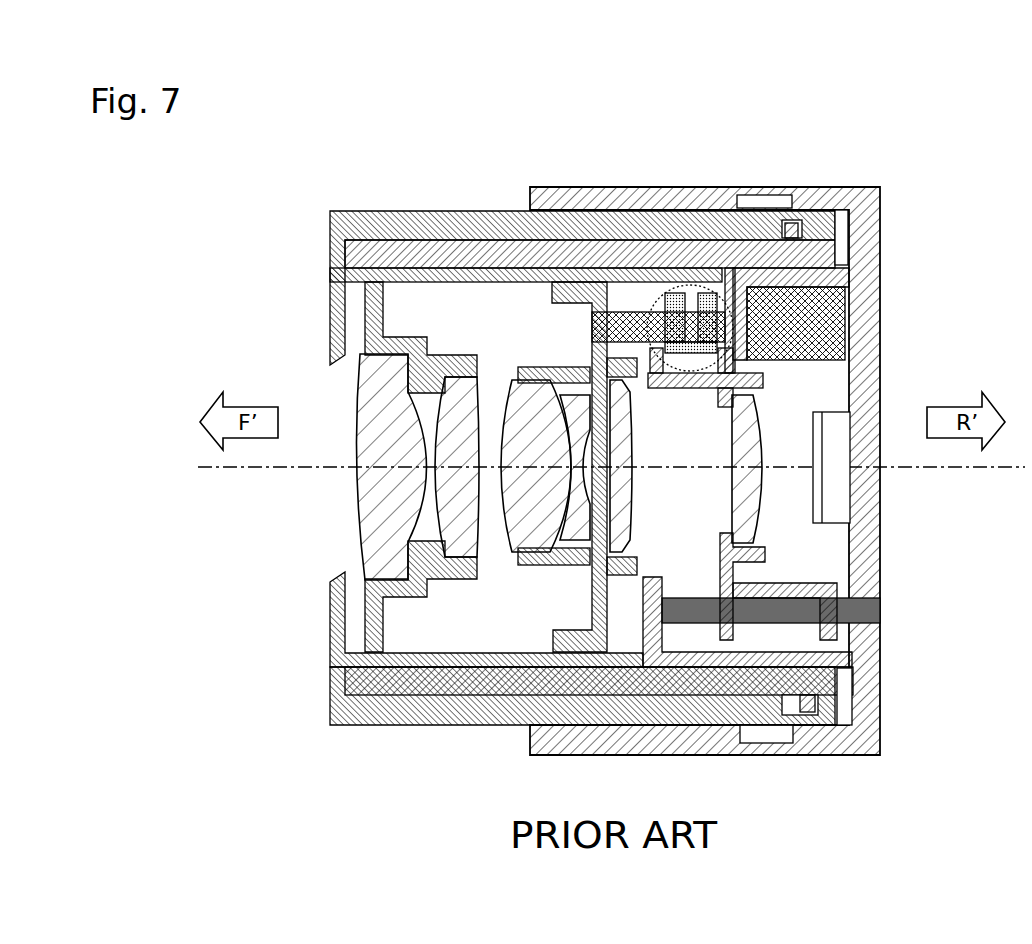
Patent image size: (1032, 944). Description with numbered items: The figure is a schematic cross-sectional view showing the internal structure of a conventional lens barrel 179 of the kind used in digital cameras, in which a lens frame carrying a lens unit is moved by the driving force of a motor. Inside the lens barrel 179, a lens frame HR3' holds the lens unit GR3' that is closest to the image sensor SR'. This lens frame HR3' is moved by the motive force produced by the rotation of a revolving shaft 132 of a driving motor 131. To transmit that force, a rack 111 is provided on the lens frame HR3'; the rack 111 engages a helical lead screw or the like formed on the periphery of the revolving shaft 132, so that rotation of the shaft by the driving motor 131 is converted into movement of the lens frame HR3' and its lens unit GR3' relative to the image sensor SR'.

The lens barrel 179 is at (898, 132).
The driving motor 131 is at (840, 307).
The revolving shaft 132 is at (594, 326).
The rack 111 is at (694, 388).
The lens frame HR3' is at (747, 337).
The lens unit GR3' is at (766, 517).
The image sensor SR' is at (875, 467).